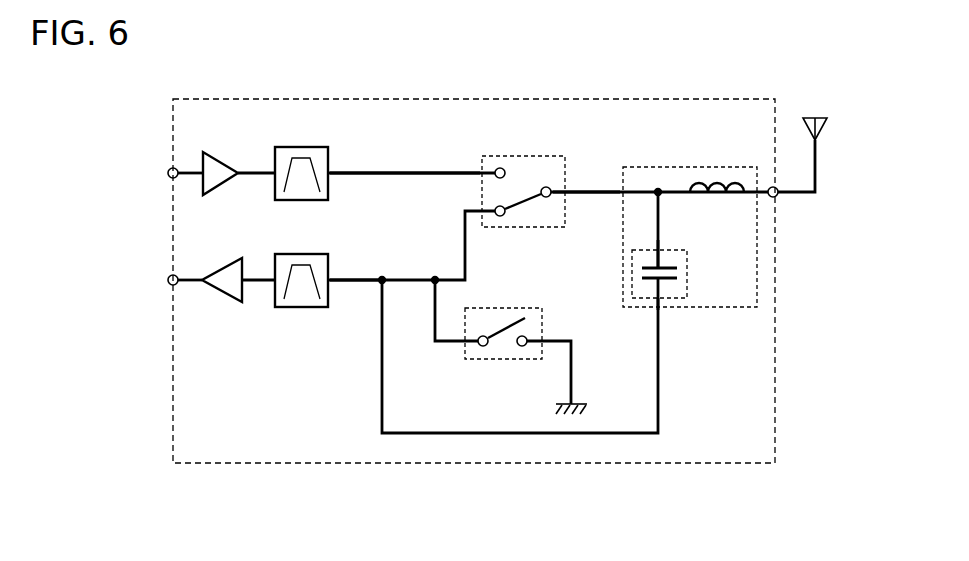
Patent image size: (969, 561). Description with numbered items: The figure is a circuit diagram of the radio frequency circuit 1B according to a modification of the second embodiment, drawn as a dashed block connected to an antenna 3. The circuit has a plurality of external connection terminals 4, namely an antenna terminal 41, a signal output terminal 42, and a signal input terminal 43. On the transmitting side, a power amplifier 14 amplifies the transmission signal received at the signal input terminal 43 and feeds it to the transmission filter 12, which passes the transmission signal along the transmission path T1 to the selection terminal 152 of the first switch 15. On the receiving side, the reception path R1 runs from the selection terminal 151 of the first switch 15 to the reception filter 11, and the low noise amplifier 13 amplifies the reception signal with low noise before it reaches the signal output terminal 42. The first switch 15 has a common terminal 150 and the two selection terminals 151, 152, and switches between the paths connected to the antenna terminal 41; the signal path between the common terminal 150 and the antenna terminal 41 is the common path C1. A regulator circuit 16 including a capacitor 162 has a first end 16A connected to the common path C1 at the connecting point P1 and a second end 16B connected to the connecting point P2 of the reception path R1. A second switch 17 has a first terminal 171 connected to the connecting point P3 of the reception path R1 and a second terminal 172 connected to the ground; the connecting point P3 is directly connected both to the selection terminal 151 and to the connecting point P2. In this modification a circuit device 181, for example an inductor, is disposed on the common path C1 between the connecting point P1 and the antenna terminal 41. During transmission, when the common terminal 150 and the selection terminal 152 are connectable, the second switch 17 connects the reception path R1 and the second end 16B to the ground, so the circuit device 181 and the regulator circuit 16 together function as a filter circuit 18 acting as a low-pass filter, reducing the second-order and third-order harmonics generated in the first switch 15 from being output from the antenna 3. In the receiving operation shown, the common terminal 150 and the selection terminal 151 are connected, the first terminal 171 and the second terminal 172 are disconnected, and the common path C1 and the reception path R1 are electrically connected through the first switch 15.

The radio frequency circuit 1B is at (708, 97).
The antenna 3 is at (826, 125).
The external connection terminals 4 is at (813, 214).
The antenna terminal 41 is at (778, 197).
The signal output terminal 42 is at (168, 281).
The signal input terminal 43 is at (168, 173).
The reception filter 11 is at (302, 308).
The transmission filter 12 is at (302, 147).
The low noise amplifier 13 is at (226, 290).
The power amplifier 14 is at (215, 160).
The first switch 15 is at (547, 193).
The common terminal 150 is at (552, 197).
The selection terminal 151 is at (500, 218).
The selection terminal 152 is at (500, 167).
The regulator circuit 16 is at (659, 278).
The first end 16A is at (662, 252).
The second end 16B is at (662, 300).
The capacitor 162 is at (680, 273).
The second switch 17 is at (518, 348).
The first terminal 171 is at (482, 348).
The second terminal 172 is at (523, 348).
The filter circuit 18 is at (693, 211).
The circuit device 181 is at (704, 180).
The connecting point P1 is at (658, 188).
The connecting point P2 is at (382, 278).
The connecting point P3 is at (436, 278).
The transmission path T1 is at (400, 171).
The reception path R1 is at (352, 283).
The common path C1 is at (604, 190).